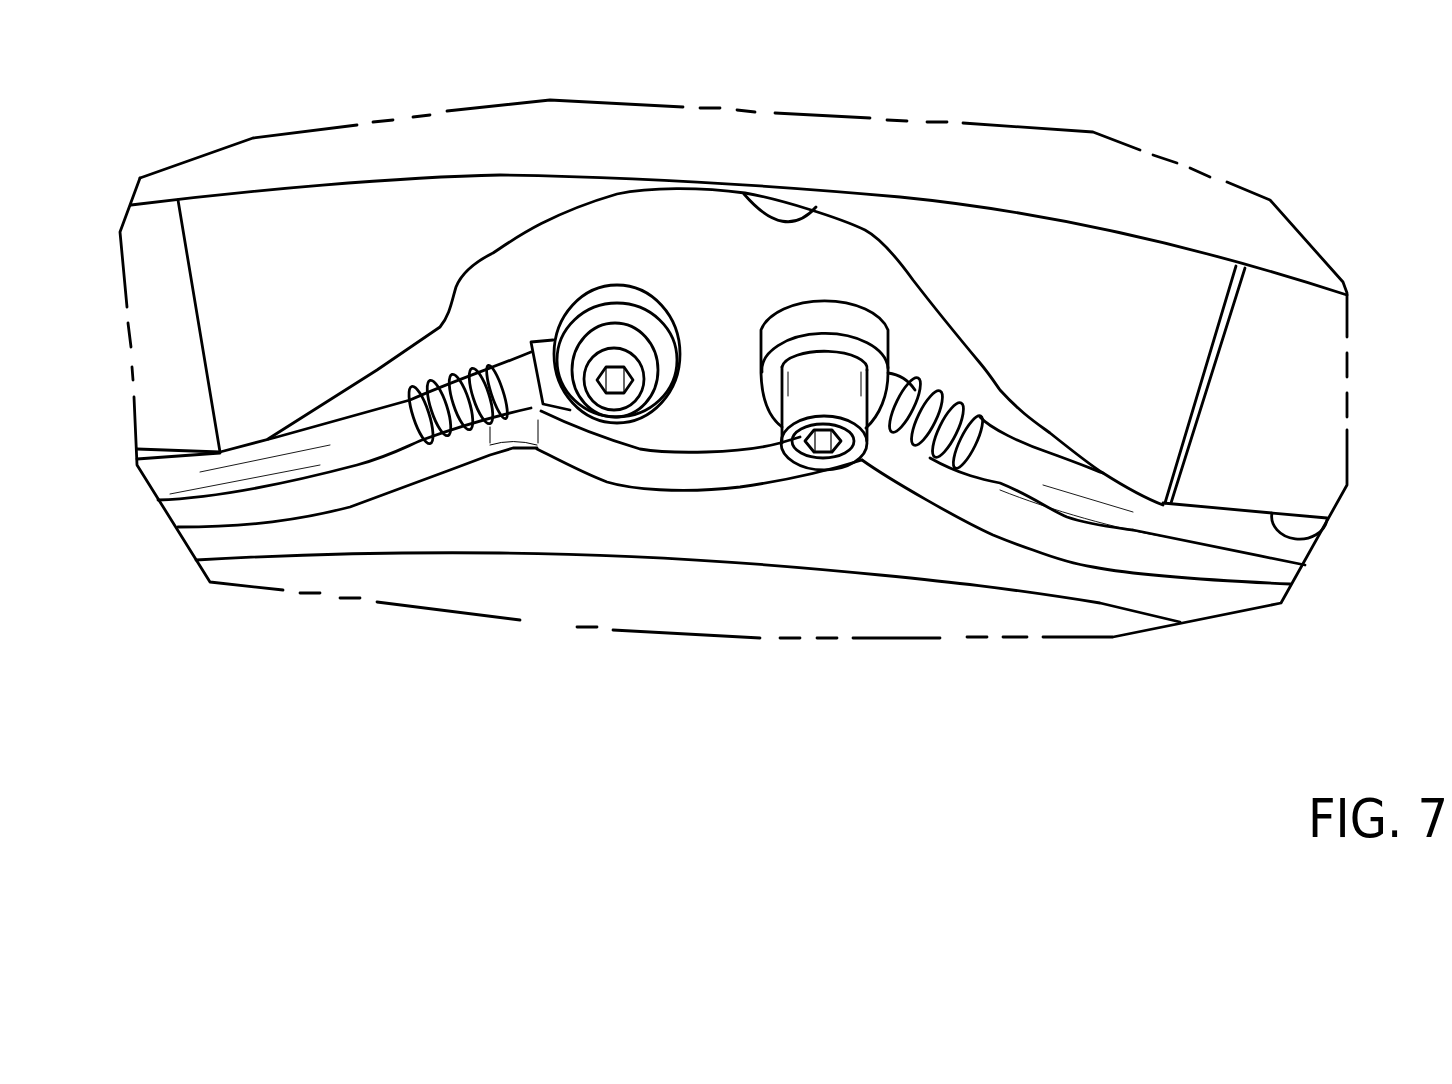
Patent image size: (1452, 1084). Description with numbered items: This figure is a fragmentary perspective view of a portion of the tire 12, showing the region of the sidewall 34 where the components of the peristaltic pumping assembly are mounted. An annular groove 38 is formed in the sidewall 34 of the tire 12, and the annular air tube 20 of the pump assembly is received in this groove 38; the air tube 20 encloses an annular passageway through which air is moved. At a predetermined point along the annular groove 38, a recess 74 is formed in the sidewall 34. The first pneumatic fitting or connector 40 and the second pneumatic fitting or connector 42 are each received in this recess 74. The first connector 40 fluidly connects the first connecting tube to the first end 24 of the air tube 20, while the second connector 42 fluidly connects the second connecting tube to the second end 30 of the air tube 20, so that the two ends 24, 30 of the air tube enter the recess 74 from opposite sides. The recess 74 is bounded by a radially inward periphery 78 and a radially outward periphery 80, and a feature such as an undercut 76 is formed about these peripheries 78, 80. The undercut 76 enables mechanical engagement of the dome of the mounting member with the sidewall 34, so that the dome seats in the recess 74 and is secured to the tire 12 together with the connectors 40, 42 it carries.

The tire 12 is at (1186, 162).
The annular air tube 20 is at (1198, 532).
The first end of the air tube 24 is at (987, 463).
The second end of the air tube 30 is at (223, 490).
The sidewall 34 is at (1280, 445).
The annular groove 38 is at (1320, 528).
The first pneumatic fitting or connector 40 is at (847, 308).
The second pneumatic fitting or connector 42 is at (595, 297).
The recess 74 is at (675, 255).
The undercut 76 is at (810, 210).
The radially inward periphery 78 is at (775, 478).
The radially outward periphery 80 is at (705, 190).